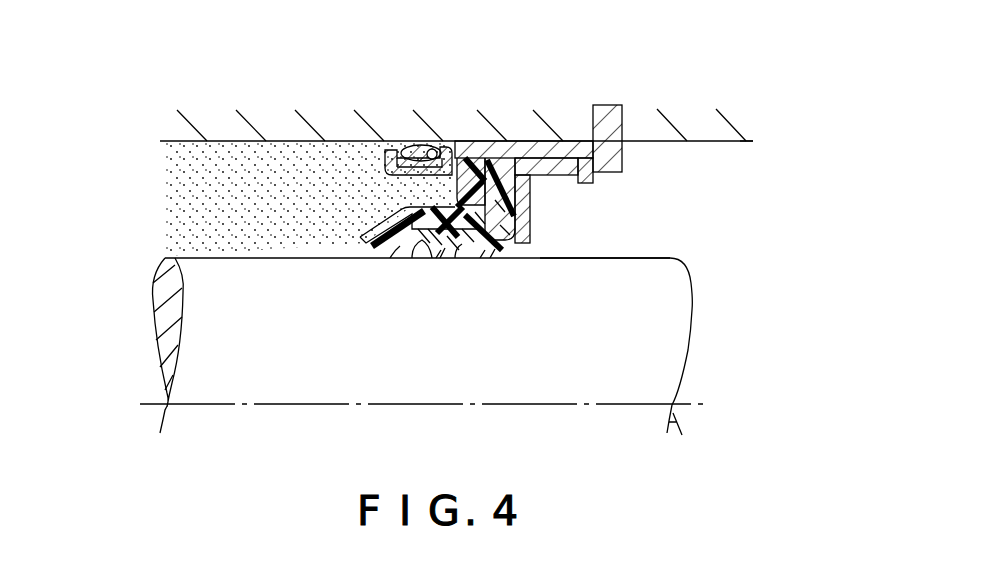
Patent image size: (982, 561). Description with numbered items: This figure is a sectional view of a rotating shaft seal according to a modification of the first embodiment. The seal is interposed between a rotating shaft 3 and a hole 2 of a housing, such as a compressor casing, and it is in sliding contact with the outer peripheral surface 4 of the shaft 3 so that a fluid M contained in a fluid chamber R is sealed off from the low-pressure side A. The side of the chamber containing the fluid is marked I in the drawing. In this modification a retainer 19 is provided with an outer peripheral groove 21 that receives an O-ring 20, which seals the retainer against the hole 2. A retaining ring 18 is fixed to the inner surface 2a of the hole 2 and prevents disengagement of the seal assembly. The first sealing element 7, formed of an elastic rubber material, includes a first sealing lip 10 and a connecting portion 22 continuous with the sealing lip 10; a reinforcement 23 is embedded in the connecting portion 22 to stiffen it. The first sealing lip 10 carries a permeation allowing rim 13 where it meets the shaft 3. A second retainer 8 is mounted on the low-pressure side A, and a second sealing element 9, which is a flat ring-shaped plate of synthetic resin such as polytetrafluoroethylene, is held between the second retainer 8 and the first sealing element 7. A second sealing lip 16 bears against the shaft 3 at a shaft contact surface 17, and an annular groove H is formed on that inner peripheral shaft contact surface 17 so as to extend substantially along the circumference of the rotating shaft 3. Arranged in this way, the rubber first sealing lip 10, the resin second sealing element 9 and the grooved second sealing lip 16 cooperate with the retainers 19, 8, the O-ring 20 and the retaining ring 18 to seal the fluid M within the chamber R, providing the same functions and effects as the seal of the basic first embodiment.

The hole 2 is at (712, 144).
The inner surface 2a is at (733, 143).
The rotating shaft 3 is at (671, 257).
The outer peripheral surface 4 is at (593, 255).
The first sealing element 7 is at (386, 214).
The second retainer 8 is at (532, 199).
The second sealing element 9 is at (507, 244).
The first sealing lip 10 is at (400, 255).
The permeation allowing rim 13 is at (374, 258).
The second sealing lip 16 is at (412, 257).
The shaft contact surface 17 is at (458, 257).
The retaining ring 18 is at (610, 110).
The retainer 19 is at (568, 140).
The O-ring 20 is at (408, 139).
The outer peripheral groove 21 is at (428, 146).
The connecting portion 22 is at (503, 157).
The reinforcement 23 is at (465, 140).
The fluid M is at (170, 187).
The fluid chamber R is at (268, 222).
The inner side I is at (262, 79).
The low-pressure side A is at (682, 221).
The annular groove H is at (437, 257).